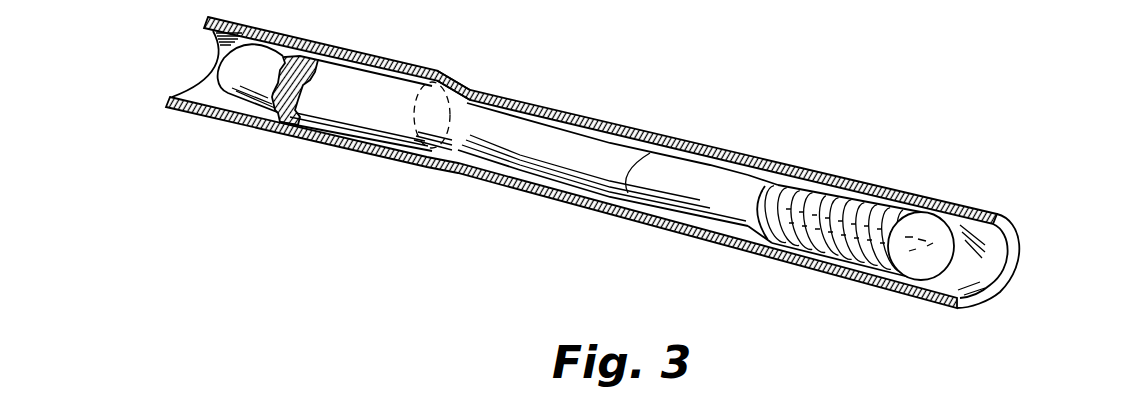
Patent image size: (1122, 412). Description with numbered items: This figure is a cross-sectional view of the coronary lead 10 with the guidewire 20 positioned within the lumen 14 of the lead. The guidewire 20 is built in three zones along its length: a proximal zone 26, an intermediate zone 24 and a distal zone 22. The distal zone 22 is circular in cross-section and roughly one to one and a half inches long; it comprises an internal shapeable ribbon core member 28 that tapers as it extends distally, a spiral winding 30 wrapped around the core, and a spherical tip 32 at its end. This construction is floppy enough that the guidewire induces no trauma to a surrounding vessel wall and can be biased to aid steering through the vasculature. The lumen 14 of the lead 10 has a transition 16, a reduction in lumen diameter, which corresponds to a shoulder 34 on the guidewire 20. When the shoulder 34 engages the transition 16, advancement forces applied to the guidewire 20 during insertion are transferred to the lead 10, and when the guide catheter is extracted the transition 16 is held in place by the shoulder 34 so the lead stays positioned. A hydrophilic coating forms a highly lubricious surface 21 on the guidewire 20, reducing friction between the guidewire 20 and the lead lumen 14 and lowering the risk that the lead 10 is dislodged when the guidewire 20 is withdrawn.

The coronary lead 10 is at (581, 208).
The lumen 14 is at (985, 262).
The transition 16 is at (464, 88).
The guidewire 20 is at (801, 140).
The surface 21 is at (535, 134).
The distal zone 22 is at (843, 264).
The intermediate zone 24 is at (576, 182).
The proximal zone 26 is at (380, 186).
The internal shapeable ribbon core member 28 is at (908, 250).
The spiral winding 30 is at (833, 193).
The spherical tip 32 is at (968, 253).
The shoulder 34 is at (442, 93).